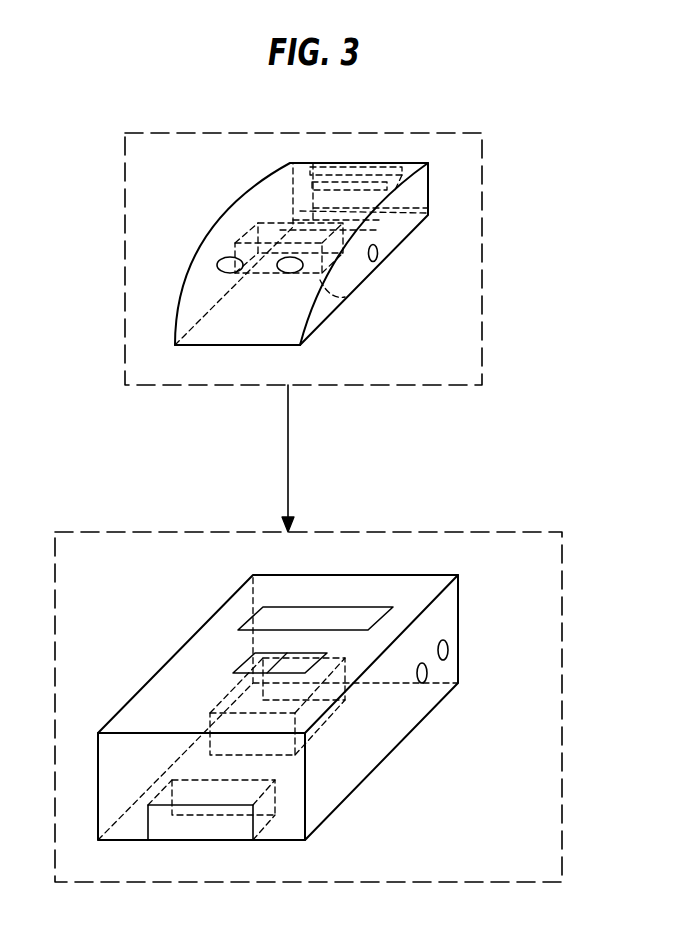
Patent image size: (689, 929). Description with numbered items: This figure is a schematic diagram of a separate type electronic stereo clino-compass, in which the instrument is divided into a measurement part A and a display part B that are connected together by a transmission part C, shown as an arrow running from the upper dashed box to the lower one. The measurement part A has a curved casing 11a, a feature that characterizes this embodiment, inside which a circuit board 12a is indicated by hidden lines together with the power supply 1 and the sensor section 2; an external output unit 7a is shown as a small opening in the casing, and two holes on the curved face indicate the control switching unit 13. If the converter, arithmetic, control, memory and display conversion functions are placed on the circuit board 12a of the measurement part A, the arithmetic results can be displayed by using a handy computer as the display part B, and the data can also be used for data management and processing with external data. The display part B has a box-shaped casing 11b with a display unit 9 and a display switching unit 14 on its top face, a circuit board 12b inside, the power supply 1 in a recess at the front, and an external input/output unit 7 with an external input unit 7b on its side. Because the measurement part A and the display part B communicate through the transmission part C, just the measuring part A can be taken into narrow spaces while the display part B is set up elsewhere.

The measurement part A is at (124, 218).
The display part B is at (113, 532).
The transmission part C is at (290, 460).
The casing 11a is at (258, 193).
The circuit board 12a is at (373, 163).
The power supply 1 is at (383, 228).
The sensor section 2 is at (345, 297).
The external output unit 7a is at (377, 261).
The control switching unit 13 is at (227, 272).
The casing 11b is at (227, 602).
The display unit 9 is at (338, 617).
The display switching unit 14 is at (245, 658).
The circuit board 12b is at (328, 720).
The external input unit 7b is at (448, 648).
The external input/output unit 7 is at (428, 668).